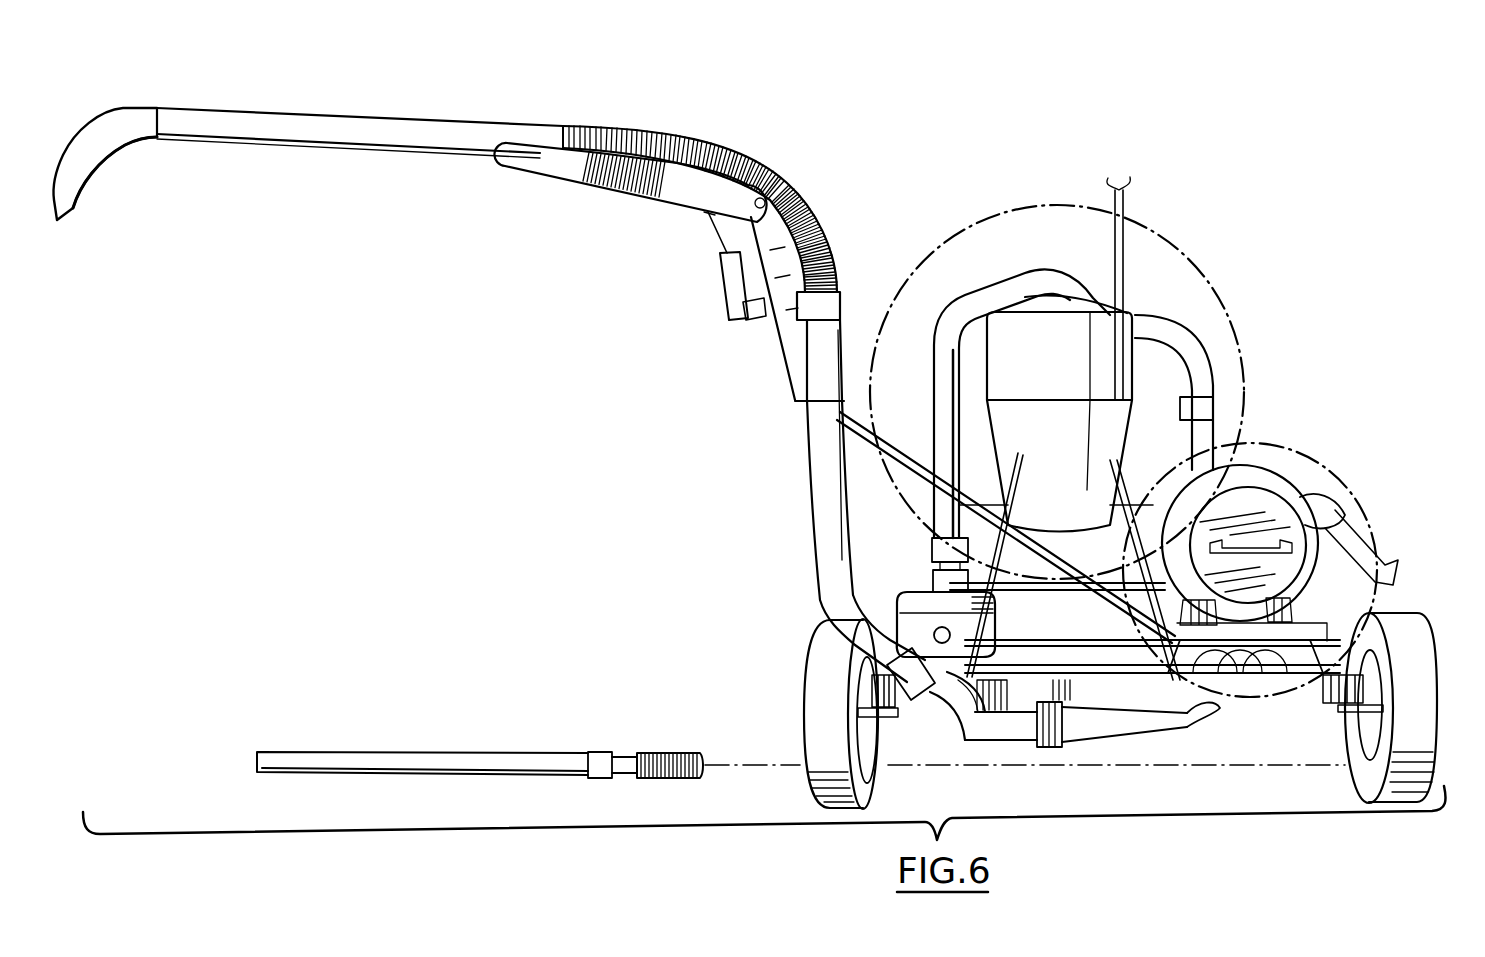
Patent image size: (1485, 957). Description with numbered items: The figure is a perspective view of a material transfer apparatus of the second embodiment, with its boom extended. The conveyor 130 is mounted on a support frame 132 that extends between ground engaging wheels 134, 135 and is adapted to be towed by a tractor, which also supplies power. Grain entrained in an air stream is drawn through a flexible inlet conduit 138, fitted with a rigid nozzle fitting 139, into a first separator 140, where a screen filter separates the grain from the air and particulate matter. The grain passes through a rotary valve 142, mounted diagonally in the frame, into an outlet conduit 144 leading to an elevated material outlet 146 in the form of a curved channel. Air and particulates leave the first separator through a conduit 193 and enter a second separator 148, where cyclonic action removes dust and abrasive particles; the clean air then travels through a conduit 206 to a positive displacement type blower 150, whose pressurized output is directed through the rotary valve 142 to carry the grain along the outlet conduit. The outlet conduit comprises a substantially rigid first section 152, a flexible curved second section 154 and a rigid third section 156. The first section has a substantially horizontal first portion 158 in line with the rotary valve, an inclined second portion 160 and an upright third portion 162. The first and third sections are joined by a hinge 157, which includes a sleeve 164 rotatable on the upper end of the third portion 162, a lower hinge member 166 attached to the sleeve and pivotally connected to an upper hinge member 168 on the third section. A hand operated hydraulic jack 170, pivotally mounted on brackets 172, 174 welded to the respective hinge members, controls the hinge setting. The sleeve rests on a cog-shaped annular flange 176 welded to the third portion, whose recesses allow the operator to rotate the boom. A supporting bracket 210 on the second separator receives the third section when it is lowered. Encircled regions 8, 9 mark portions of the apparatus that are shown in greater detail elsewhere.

The conveyor 130 is at (1160, 160).
The support frame 132 is at (1313, 696).
The ground engaging wheel 134 is at (1360, 773).
The ground engaging wheel 135 is at (805, 786).
The flexible inlet conduit 138 is at (665, 752).
The rigid nozzle fitting 139 is at (412, 752).
The first separator 140 is at (1290, 471).
The rotary valve 142 is at (1205, 710).
The outlet conduit 144 is at (796, 516).
The elevated material outlet 146 is at (66, 216).
The second separator 148 is at (1095, 314).
The positive displacement type blower 150 is at (900, 612).
The first section 152 is at (815, 598).
The second section 154 is at (788, 185).
The third section 156 is at (230, 143).
The hinge 157 is at (707, 218).
The first portion 158 is at (1120, 716).
The second portion 160 is at (923, 695).
The third portion 162 is at (808, 480).
The sleeve 164 is at (798, 401).
The lower hinge member 166 is at (792, 322).
The upper hinge member 168 is at (565, 182).
The hand operated hydraulic jack 170 is at (724, 292).
The bracket 172 is at (757, 325).
The bracket 174 is at (710, 225).
The cog-shaped annular flange 176 is at (836, 420).
The conduit 193 is at (1180, 313).
The conduit 206 is at (987, 295).
The supporting bracket 210 is at (1128, 210).
The section view circle 8 is at (1362, 508).
The section view circle 9 is at (956, 228).